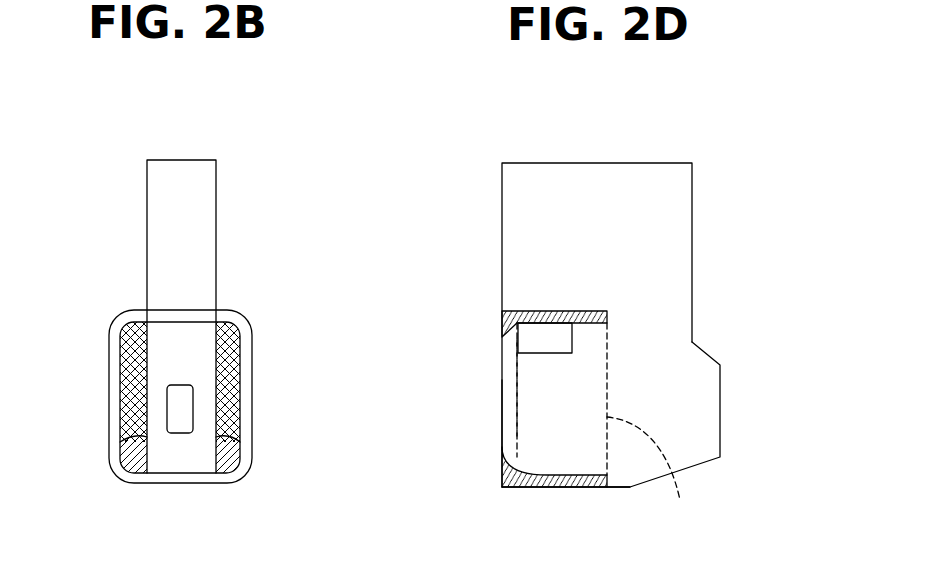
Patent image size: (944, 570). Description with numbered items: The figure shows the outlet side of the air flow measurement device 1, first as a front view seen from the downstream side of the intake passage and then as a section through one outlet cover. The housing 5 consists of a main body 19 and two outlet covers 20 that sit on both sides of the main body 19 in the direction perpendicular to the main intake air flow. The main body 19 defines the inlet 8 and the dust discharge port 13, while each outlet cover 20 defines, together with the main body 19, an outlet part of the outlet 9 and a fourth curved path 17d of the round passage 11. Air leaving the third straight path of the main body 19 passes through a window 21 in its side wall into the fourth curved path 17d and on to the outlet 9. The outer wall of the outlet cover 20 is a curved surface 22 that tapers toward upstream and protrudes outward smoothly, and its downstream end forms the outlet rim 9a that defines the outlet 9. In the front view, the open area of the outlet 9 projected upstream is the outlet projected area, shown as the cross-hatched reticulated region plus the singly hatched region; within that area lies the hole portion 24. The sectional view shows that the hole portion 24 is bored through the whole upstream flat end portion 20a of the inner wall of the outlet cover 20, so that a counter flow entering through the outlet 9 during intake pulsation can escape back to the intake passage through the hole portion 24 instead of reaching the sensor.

In FIG. 2B, the air flow measurement device 1 is at (108, 120).
In FIG. 2D, the air flow measurement device 1 is at (440, 137).
In FIG. 2B, the housing 5 is at (144, 174).
In FIG. 2D, the housing 5 is at (500, 200).
In FIG. 2B, the main body 19 is at (204, 201).
In FIG. 2D, the main body 19 is at (668, 212).
In FIG. 2B, the outlet cover 20 is at (241, 314).
In FIG. 2D, the outlet cover 20 is at (535, 482).
In FIG. 2B, the outlet rim 9a is at (245, 332).
In FIG. 2D, the outlet rim 9a is at (607, 482).
In FIG. 2B, the hole portion 24 is at (232, 383).
In FIG. 2D, the hole portion 24 is at (507, 407).
In FIG. 2B, the outlet 9 is at (230, 467).
In FIG. 2D, the outlet 9 is at (683, 500).
In FIG. 2B, the dust discharge port 13 is at (177, 432).
In FIG. 2D, the dust discharge port 13 is at (721, 401).
In FIG. 2D, the window 21 is at (533, 333).
In FIG. 2D, the upstream flat end portion 20a is at (508, 362).
In FIG. 2D, the fourth curved path 17d is at (532, 403).
In FIG. 2D, the round passage 11 is at (562, 399).
In FIG. 2D, the inlet 8 is at (500, 428).
In FIG. 2D, the curved surface 22 is at (500, 483).